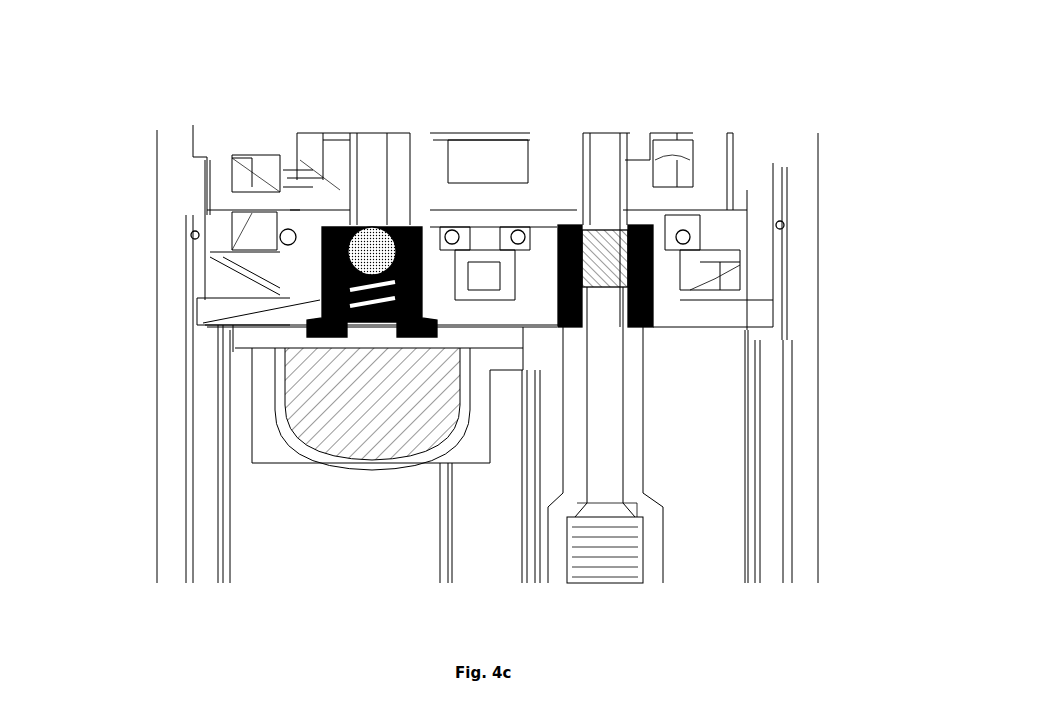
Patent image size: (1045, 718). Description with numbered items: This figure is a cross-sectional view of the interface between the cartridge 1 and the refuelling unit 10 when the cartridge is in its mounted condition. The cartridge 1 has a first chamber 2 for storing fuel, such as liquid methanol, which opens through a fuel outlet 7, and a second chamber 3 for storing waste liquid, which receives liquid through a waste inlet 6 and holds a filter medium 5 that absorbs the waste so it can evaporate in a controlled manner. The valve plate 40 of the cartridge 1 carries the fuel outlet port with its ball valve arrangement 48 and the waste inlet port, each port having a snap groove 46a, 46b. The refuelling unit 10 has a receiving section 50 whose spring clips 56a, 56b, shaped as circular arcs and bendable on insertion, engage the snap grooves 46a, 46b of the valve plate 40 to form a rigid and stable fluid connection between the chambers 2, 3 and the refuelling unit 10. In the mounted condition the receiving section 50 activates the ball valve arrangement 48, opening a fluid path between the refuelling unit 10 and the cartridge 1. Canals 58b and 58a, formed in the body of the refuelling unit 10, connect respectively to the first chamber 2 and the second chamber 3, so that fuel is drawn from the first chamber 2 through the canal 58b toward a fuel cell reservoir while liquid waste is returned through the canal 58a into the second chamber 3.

The cartridge 1 is at (760, 598).
The first chamber 2 is at (283, 540).
The second chamber 3 is at (633, 550).
The filter medium 5 is at (608, 558).
The waste inlet 6 is at (610, 402).
The fuel outlet 7 is at (363, 328).
The refuelling unit 10 is at (745, 88).
The valve plate 40 is at (717, 307).
The snap groove 46a is at (520, 236).
The snap groove 46b is at (265, 236).
The ball valve arrangement 48 is at (290, 232).
The receiving section 50 is at (223, 275).
The spring clip 56a is at (520, 236).
The spring clip 56b is at (263, 236).
The canal 58a is at (603, 170).
The canal 58b is at (370, 140).